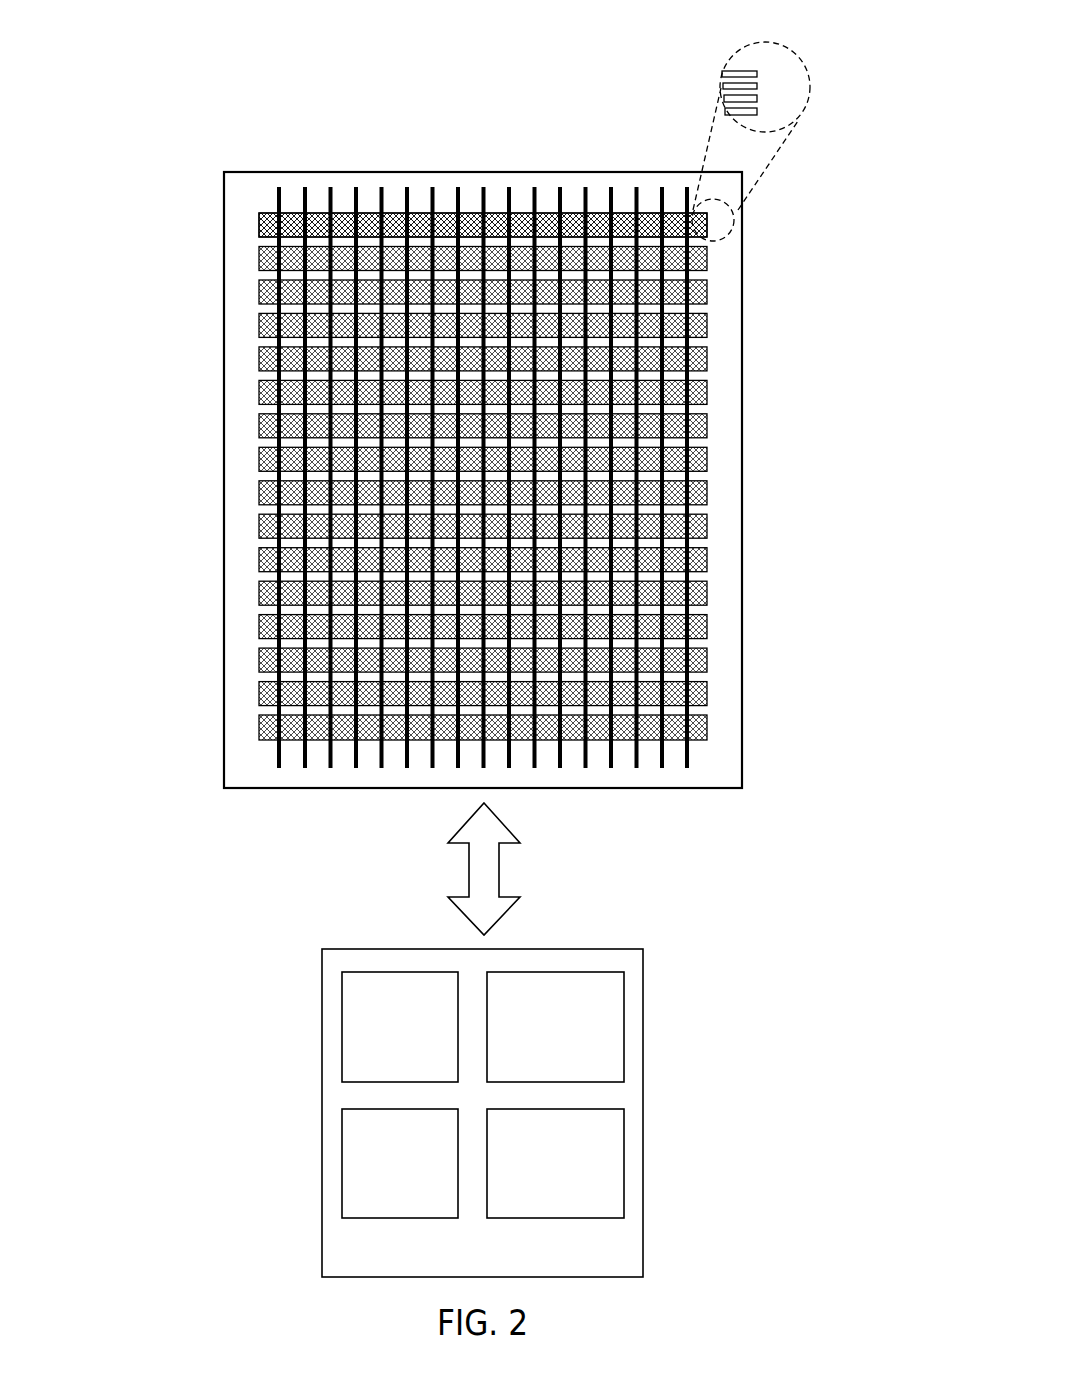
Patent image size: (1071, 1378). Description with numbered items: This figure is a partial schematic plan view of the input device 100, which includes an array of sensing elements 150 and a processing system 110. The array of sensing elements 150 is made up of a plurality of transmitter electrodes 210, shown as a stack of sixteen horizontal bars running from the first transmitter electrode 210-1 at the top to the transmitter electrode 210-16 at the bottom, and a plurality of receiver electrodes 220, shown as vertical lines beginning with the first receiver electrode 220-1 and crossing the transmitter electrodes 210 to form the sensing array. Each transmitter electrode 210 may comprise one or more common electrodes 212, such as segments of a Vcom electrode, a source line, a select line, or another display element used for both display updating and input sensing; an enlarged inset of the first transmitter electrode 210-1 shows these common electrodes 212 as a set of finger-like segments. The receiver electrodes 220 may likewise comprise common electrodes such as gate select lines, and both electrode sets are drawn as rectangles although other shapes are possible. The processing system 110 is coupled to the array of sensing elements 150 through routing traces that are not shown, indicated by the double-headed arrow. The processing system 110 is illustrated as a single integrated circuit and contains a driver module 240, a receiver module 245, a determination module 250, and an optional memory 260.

The input device 100 is at (186, 97).
The processing system 110 is at (602, 1256).
The array of sensing elements 150 is at (344, 190).
The transmitter electrodes 210 is at (87, 744).
The first transmitter electrode 210-1 is at (258, 223).
The sixteenth transmitter electrode 210-16 is at (258, 728).
The common electrodes 212 is at (757, 74).
The receiver electrodes 220 is at (695, 157).
The first receiver electrode 220-1 is at (284, 199).
The driver module 240 is at (416, 1059).
The receiver module 245 is at (418, 1197).
The determination module 250 is at (573, 1197).
The optional memory 260 is at (572, 1059).